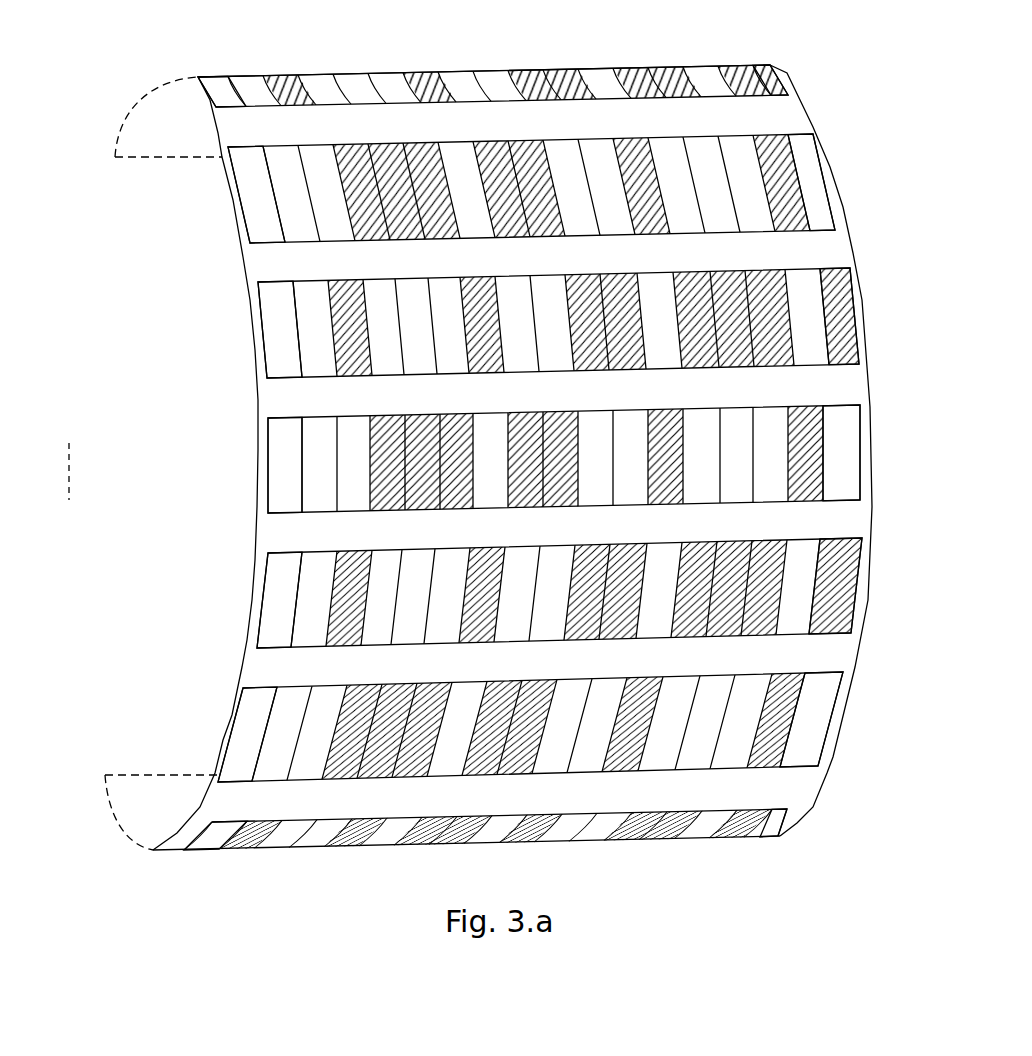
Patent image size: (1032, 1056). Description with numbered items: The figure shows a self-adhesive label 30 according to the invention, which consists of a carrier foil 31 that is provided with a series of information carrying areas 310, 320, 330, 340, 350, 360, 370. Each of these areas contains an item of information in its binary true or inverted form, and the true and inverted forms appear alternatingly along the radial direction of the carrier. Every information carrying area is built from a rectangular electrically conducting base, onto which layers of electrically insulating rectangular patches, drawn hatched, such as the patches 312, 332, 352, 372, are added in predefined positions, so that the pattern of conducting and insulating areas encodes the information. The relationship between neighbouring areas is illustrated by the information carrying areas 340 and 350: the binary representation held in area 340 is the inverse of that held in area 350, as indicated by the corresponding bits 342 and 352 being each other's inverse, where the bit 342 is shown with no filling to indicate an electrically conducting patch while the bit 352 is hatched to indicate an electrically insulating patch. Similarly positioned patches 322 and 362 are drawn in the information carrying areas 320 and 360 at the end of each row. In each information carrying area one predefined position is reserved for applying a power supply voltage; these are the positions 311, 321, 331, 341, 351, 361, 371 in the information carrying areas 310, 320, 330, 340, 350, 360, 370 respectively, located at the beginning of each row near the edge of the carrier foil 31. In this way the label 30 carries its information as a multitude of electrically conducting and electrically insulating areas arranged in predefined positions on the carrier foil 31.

The self-adhesive label 30 is at (415, 52).
The carrier foil 31 is at (800, 110).
The information carrying area 310 is at (207, 95).
The predefined position 311 is at (220, 90).
The electrically insulating rectangular patch 312 is at (763, 63).
The information carrying area 320 is at (240, 197).
The predefined position 321 is at (252, 165).
The last electrode of second row 322 is at (820, 182).
The information carrying area 330 is at (262, 350).
The predefined position 331 is at (278, 303).
The electrically insulating rectangular patch 332 is at (842, 293).
The information carrying area 340 is at (268, 478).
The predefined position 341 is at (287, 442).
The bit 342 is at (850, 430).
The information carrying area 350 is at (258, 612).
The predefined position 351 is at (280, 575).
The bit 352 is at (843, 592).
The information carrying area 360 is at (225, 748).
The predefined position 361 is at (250, 712).
The last electrode of sixth row 362 is at (810, 718).
The information carrying area 370 is at (212, 843).
The predefined position 371 is at (210, 840).
The electrically insulating rectangular patch 372 is at (775, 828).